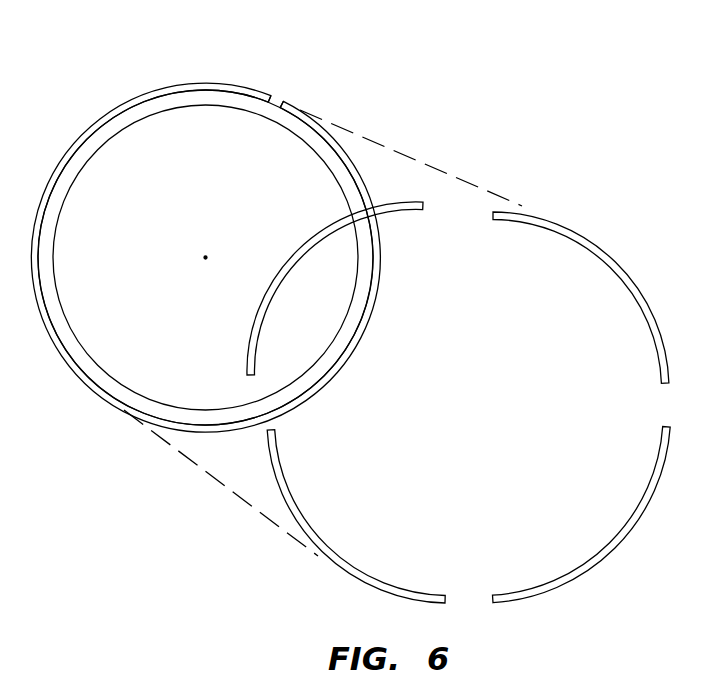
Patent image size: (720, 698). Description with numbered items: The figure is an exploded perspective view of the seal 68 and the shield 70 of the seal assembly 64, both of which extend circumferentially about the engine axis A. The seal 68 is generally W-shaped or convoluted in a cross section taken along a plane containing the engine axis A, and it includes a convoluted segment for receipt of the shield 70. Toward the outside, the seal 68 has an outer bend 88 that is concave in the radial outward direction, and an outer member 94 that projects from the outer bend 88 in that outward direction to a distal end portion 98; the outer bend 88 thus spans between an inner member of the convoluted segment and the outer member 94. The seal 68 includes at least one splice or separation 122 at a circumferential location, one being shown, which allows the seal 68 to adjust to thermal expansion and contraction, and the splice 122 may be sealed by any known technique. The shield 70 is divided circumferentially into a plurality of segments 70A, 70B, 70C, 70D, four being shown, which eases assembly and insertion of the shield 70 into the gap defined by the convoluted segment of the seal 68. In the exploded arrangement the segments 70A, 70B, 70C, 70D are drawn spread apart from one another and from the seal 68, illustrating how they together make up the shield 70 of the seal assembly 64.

The seal assembly 64 is at (572, 103).
The seal 68 is at (243, 84).
The shield 70 is at (582, 225).
The segment 70A is at (277, 300).
The segment 70B is at (330, 542).
The segment 70C is at (613, 543).
The segment 70D is at (612, 268).
The outer bend 88 is at (98, 150).
The outer member 94 is at (144, 113).
The distal end portion 98 is at (172, 84).
The splice 122 is at (268, 118).
The engine axis A is at (206, 255).